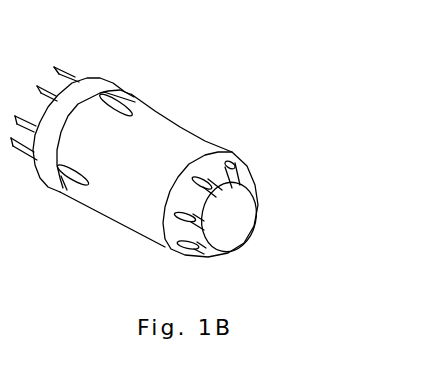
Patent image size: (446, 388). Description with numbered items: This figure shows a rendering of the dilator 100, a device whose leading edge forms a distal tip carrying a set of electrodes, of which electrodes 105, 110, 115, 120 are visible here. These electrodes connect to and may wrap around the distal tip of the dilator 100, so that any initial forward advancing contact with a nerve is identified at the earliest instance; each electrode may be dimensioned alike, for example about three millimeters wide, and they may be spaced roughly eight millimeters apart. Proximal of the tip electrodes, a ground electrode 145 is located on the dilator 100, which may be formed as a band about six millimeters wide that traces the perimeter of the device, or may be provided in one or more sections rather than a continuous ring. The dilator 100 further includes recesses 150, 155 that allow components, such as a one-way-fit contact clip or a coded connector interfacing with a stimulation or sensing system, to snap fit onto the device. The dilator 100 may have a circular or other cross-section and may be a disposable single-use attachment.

The dilator 100 is at (245, 93).
The electrode 105 is at (225, 172).
The electrode 110 is at (239, 153).
The electrode 115 is at (137, 243).
The electrode 120 is at (193, 247).
The ground electrode 145 is at (98, 91).
The recess 150 is at (130, 96).
The recess 155 is at (62, 189).